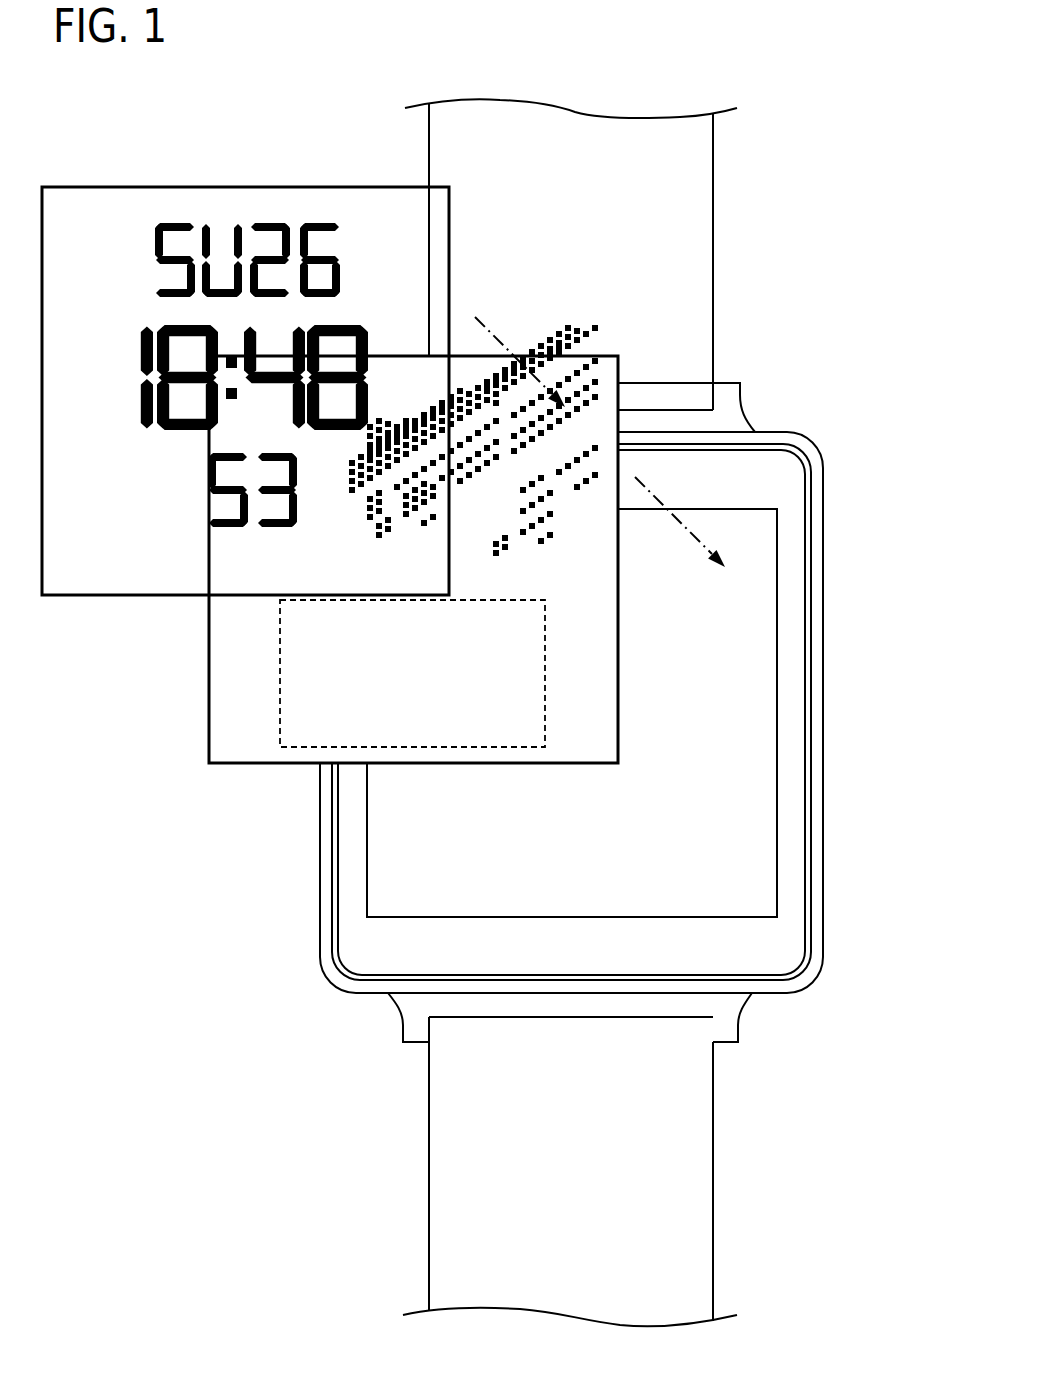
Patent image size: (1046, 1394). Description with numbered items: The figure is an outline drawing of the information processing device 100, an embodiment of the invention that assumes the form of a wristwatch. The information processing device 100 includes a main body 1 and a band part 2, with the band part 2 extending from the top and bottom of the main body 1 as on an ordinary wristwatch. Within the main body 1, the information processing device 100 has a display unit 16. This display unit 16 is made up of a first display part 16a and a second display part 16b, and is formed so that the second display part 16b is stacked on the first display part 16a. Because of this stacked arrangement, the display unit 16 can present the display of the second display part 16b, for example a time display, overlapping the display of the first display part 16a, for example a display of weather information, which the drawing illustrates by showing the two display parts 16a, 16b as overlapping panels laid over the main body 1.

The information processing device 100 is at (615, 698).
The main body 1 is at (817, 446).
The band part 2 is at (700, 305).
The display unit 16 is at (316, 475).
The first display part 16a is at (217, 742).
The second display part 16b is at (170, 580).